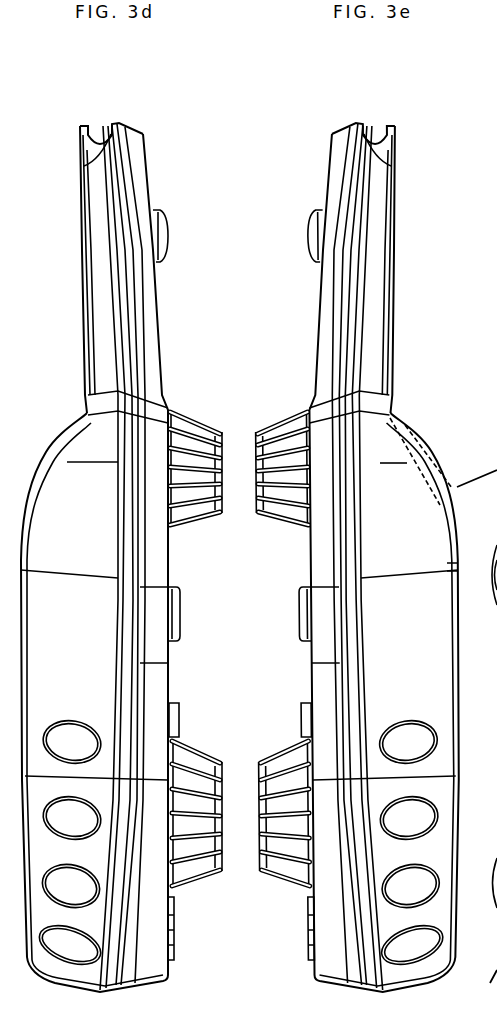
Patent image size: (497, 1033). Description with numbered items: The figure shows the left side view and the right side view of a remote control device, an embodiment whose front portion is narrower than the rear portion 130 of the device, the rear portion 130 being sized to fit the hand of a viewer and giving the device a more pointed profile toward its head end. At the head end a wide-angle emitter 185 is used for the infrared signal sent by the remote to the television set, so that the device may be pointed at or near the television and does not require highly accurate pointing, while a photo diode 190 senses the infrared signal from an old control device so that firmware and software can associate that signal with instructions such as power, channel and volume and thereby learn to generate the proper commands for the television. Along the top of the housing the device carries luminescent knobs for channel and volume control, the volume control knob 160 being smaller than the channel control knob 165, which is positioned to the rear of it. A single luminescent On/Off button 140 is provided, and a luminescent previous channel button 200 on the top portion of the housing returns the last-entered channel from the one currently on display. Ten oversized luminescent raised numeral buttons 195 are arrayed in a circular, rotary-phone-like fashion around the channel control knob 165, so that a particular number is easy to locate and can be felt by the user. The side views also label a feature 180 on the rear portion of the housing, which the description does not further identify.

In FIG. 3E, the rear portion 130 is at (477, 726).
In FIG. 3D, the On/Off button 140 is at (180, 228).
In FIG. 3E, the On/Off button 140 is at (303, 228).
In FIG. 3D, the volume control knob 160 is at (210, 418).
In FIG. 3E, the volume control knob 160 is at (277, 418).
In FIG. 3D, the channel control knob 165 is at (210, 752).
In FIG. 3E, the channel control knob 165 is at (277, 752).
In FIG. 3E, the opening 180 is at (415, 940).
In FIG. 3D, the wide-angle emitter 185 is at (103, 122).
In FIG. 3E, the photo diode 190 is at (372, 127).
In FIG. 3D, the numeral buttons 195 is at (178, 942).
In FIG. 3E, the numeral buttons 195 is at (298, 945).
In FIG. 3D, the previous channel button 200 is at (182, 615).
In FIG. 3E, the previous channel button 200 is at (290, 603).